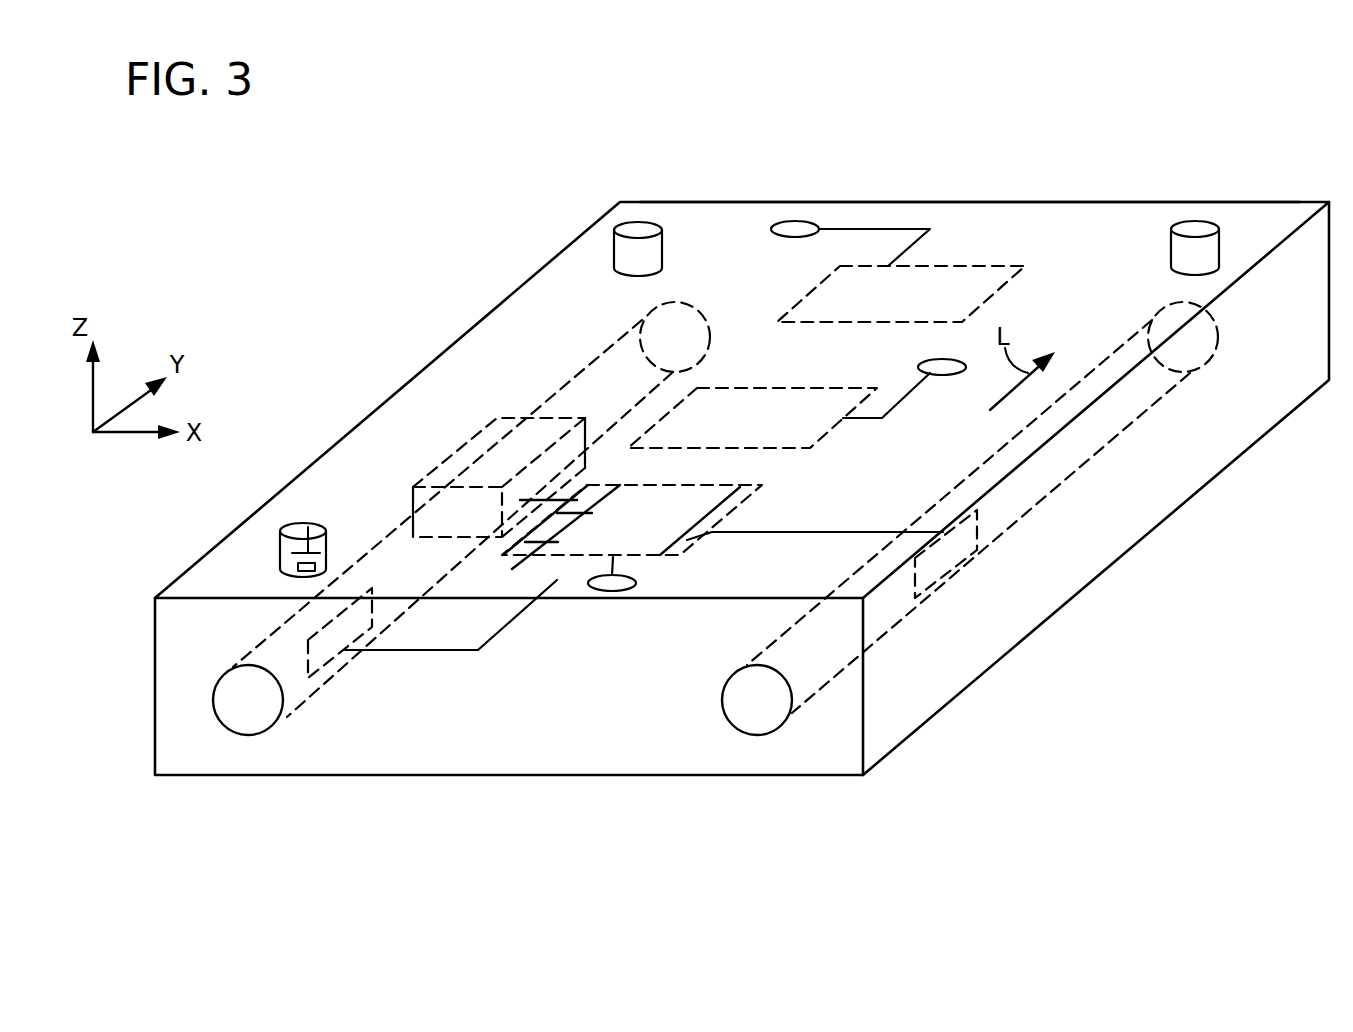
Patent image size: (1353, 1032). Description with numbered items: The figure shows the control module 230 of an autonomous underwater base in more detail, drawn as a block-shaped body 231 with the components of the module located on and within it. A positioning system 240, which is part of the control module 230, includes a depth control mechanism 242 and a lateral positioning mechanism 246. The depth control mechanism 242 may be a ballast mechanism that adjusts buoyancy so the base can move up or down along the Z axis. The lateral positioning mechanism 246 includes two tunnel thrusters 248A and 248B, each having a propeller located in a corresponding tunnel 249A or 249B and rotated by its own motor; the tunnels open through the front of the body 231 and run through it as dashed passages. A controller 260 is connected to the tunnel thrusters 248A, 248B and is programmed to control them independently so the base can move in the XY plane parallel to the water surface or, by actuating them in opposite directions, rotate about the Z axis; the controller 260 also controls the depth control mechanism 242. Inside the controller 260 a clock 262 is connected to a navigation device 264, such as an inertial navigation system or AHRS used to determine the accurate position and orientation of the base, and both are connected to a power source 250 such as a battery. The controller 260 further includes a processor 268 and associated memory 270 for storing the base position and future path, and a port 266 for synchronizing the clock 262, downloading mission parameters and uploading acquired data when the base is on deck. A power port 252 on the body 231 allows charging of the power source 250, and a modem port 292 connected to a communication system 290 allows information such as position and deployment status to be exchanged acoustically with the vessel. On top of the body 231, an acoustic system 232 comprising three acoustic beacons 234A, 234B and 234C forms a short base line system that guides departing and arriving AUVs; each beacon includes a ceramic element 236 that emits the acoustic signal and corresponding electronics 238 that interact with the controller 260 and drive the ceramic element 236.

The control module 230 is at (295, 220).
The body 231 is at (983, 215).
The acoustic system 232 is at (976, 815).
The acoustic beacon 234A is at (292, 535).
The acoustic beacon 234B is at (635, 229).
The acoustic beacon 234C is at (1198, 228).
The ceramic element 236 is at (308, 527).
The electronics 238 is at (300, 568).
The positioning system 240 is at (401, 183).
The depth control mechanism 242 is at (477, 462).
The lateral positioning mechanism 246 is at (203, 817).
The tunnel thruster 248A is at (945, 567).
The tunnel thruster 248B is at (320, 670).
The tunnel 249A is at (723, 687).
The tunnel 249B is at (213, 697).
The power source 250 is at (729, 423).
The power port 252 is at (955, 375).
The controller 260 is at (629, 516).
The clock 262 is at (687, 538).
The navigation device 264 is at (735, 505).
The port 266 is at (635, 584).
The processor 268 is at (592, 495).
The memory 270 is at (516, 566).
The communication system 290 is at (872, 298).
The modem port 292 is at (813, 226).